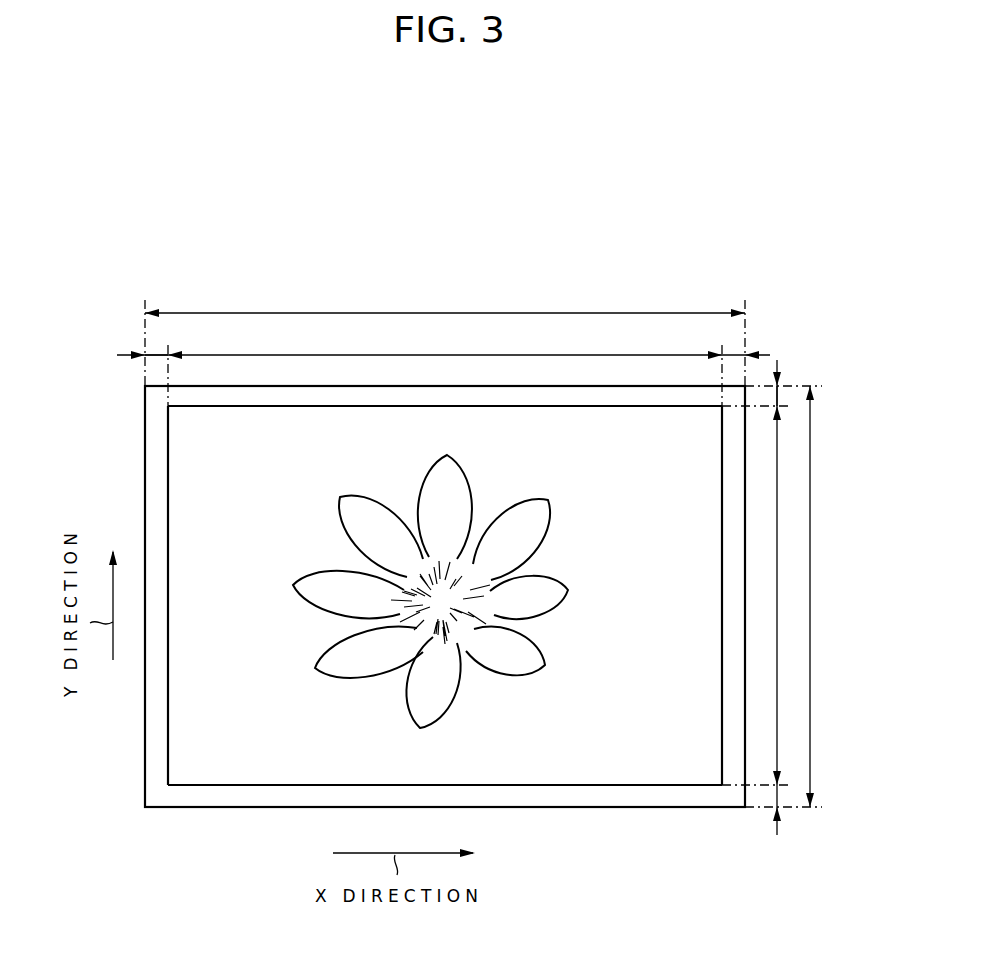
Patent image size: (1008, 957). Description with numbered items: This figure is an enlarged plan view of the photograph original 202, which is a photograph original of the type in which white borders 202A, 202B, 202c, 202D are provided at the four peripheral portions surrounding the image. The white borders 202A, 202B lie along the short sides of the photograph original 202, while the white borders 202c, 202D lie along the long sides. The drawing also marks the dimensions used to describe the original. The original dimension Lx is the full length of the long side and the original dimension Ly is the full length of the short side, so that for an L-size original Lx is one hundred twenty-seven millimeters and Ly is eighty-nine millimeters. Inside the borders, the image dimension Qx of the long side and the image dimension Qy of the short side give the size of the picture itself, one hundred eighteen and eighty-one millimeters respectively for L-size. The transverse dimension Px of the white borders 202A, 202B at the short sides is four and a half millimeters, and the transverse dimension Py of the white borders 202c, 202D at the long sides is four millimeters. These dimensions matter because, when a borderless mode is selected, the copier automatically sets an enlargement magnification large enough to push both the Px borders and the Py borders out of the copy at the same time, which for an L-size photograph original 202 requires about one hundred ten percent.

The photograph original 202 is at (674, 294).
The white border 202A is at (157, 463).
The white border 202B is at (735, 522).
The white border 202c is at (313, 394).
The white border 202D is at (593, 797).
The original dimension of the long side Lx is at (463, 312).
The image dimension of the long side Qx is at (490, 355).
The transverse dimension of the white borders at the short sides Px is at (162, 354).
The original dimension of the short side Ly is at (810, 614).
The image dimension of the short side Qy is at (777, 643).
The transverse dimension of the white borders at the long sides Py is at (777, 394).